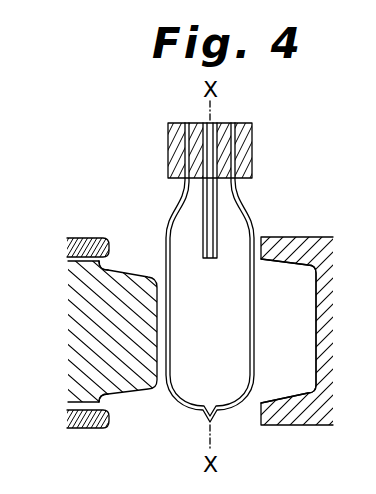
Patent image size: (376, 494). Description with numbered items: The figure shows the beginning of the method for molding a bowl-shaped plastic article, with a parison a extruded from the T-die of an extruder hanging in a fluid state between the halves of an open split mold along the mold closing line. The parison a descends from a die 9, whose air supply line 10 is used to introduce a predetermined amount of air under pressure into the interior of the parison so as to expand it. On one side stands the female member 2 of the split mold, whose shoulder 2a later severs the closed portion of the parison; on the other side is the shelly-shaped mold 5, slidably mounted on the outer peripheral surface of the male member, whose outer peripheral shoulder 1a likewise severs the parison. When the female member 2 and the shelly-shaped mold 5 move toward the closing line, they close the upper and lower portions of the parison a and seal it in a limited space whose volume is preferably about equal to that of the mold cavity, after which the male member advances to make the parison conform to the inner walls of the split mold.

The outer peripheral shoulder 1a is at (107, 266).
The female member 2 is at (285, 421).
The shoulder 2a is at (259, 409).
The shelly-shaped mold 5 is at (85, 238).
The die 9 is at (235, 162).
The air supply line 10 is at (203, 248).
The parison a is at (249, 216).